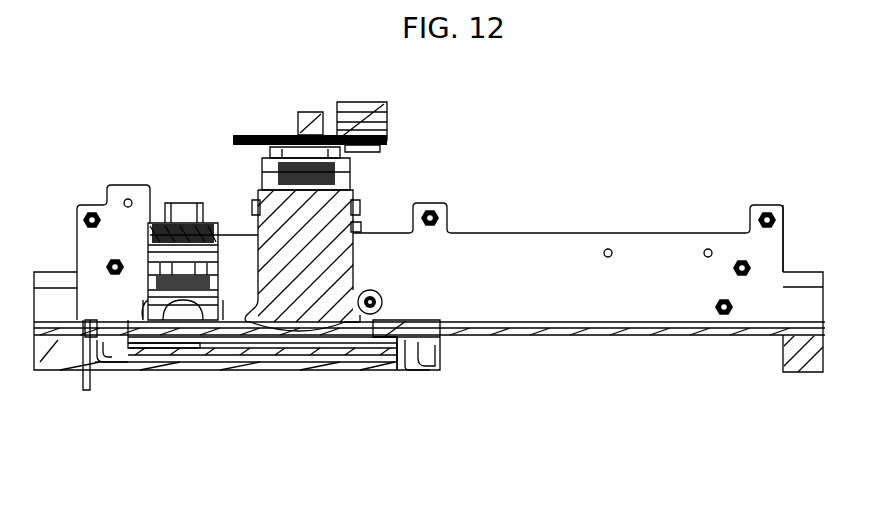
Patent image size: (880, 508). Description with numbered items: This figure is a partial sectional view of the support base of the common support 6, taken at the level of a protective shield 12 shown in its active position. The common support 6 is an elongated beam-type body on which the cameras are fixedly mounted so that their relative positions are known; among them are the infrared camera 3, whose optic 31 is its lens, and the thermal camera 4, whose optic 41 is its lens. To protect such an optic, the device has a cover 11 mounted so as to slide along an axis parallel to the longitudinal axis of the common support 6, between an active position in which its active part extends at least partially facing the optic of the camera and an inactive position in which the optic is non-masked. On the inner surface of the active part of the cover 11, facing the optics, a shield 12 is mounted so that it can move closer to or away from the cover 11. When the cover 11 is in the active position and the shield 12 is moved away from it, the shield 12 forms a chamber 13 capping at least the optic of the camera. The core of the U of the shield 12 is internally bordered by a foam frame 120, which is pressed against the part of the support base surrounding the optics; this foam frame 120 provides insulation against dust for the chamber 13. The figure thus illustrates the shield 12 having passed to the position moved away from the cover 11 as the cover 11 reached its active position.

The infrared camera 3 is at (353, 143).
The optic 31 is at (306, 243).
The thermal camera 4 is at (151, 207).
The optic 41 is at (101, 380).
The common support 6 is at (568, 220).
The cover 11 is at (442, 319).
The shield 12 is at (267, 389).
The foam frame 120 is at (207, 398).
The chamber 13 is at (274, 401).